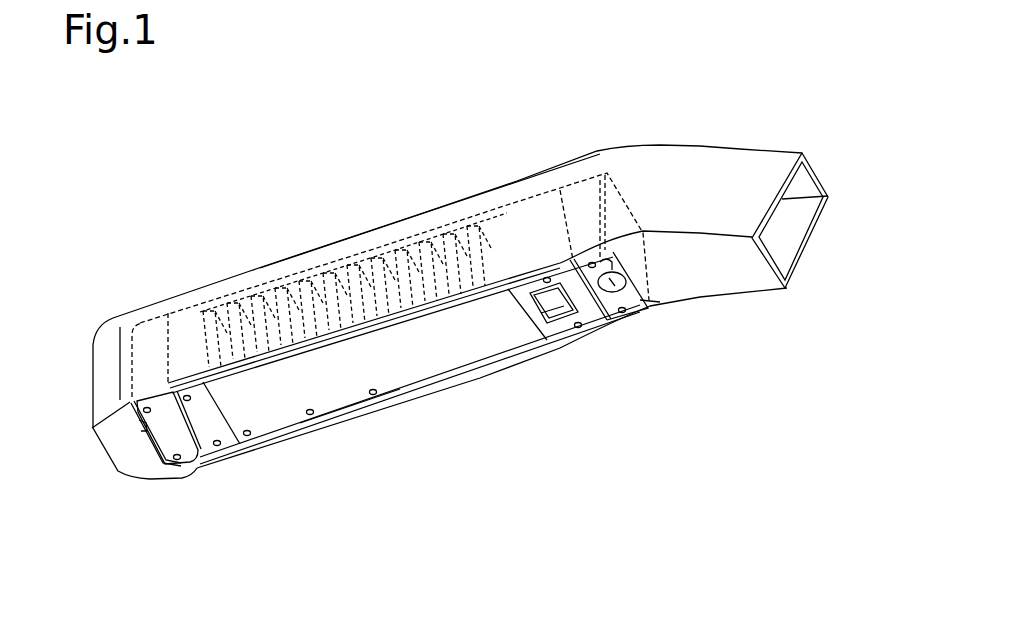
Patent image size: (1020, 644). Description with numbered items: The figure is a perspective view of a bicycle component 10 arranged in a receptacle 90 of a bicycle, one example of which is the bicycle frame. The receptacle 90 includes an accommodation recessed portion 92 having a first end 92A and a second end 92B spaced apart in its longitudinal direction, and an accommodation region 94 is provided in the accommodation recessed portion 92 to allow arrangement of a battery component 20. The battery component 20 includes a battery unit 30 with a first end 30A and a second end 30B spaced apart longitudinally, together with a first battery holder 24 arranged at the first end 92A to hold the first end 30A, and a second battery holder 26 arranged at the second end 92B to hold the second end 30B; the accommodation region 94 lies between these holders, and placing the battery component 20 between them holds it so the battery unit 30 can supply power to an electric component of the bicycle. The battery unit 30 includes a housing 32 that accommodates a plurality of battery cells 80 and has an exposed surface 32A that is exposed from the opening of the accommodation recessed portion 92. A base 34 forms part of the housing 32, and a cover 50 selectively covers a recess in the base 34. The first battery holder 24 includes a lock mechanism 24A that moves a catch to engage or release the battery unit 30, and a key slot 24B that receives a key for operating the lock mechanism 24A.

The bicycle component 10 is at (647, 97).
The battery component 20 is at (241, 546).
The first battery holder 24 is at (628, 335).
The lock mechanism 24A is at (667, 300).
The key slot 24B is at (587, 247).
The second battery holder 26 is at (190, 457).
The battery unit 30 is at (415, 484).
The first end 30A is at (523, 205).
The second end 30B is at (185, 320).
The housing 32 is at (405, 380).
The exposed surface 32A is at (343, 397).
The base 34 is at (586, 332).
The cover 50 is at (555, 338).
The battery cells 80 is at (253, 300).
The receptacle 90 is at (103, 330).
The accommodation recessed portion 92 is at (163, 458).
The first end 92A is at (618, 268).
The second end 92B is at (142, 437).
The accommodation region 94 is at (333, 250).